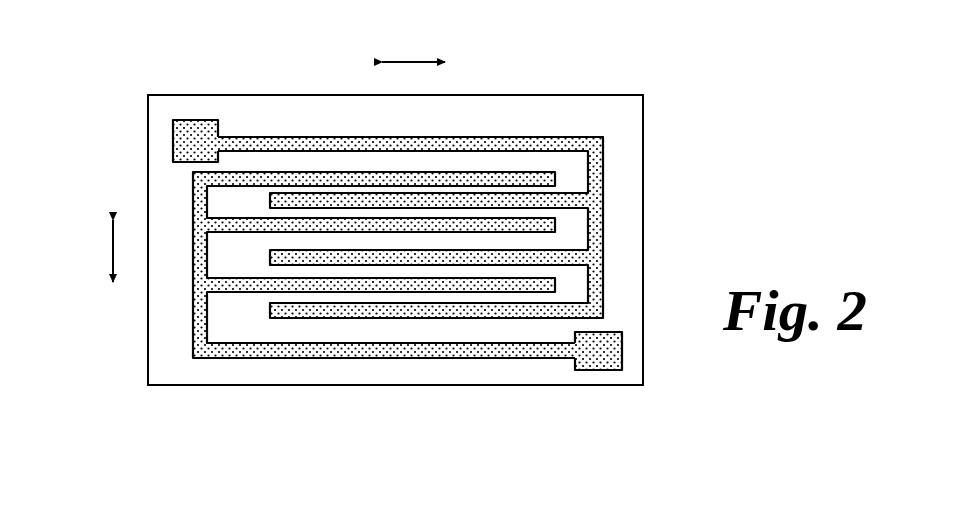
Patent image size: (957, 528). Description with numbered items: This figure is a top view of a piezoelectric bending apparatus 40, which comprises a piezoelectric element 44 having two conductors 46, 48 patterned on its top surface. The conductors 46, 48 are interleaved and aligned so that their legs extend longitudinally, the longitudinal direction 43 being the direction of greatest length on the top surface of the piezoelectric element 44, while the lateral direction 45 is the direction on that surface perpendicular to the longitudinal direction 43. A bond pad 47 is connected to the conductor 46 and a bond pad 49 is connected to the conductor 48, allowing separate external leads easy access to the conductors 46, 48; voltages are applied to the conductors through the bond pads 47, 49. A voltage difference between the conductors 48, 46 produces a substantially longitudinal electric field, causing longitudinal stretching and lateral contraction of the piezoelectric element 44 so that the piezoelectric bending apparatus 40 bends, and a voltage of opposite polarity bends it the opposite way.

The piezoelectric bending apparatus 40 is at (420, 222).
The longitudinal direction 43 is at (407, 60).
The piezoelectric element 44 is at (623, 191).
The lateral direction 45 is at (112, 248).
The conductor 46 is at (309, 137).
The bond pad 47 is at (188, 120).
The conductor 48 is at (320, 357).
The bond pad 49 is at (588, 370).